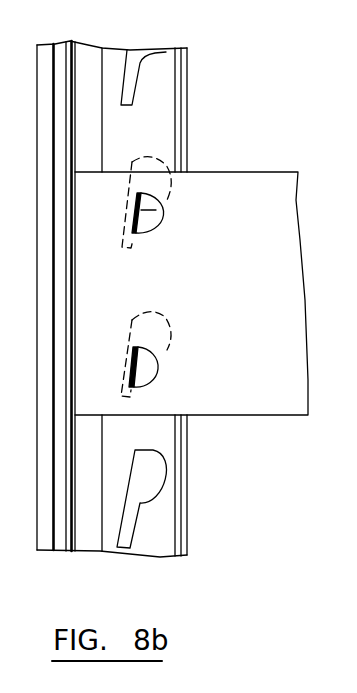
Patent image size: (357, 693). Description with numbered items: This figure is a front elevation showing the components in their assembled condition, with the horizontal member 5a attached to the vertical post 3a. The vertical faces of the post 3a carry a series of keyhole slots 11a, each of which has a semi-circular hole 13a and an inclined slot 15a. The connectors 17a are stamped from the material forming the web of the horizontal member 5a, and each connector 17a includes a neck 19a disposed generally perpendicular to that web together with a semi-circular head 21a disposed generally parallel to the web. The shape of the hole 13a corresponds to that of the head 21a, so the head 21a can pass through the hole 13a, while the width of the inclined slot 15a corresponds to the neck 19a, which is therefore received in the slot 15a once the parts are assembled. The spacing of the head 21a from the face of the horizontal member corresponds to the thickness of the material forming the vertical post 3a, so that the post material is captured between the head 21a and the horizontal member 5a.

The vertical post 3a is at (200, 111).
The keyhole slot 11a is at (158, 70).
The horizontal member 5a is at (191, 293).
The connector 17a is at (157, 218).
The semi-circular hole 13a is at (137, 318).
The inclined slot 15a is at (123, 370).
The semi-circular head 21a is at (139, 363).
The neck 19a is at (150, 382).